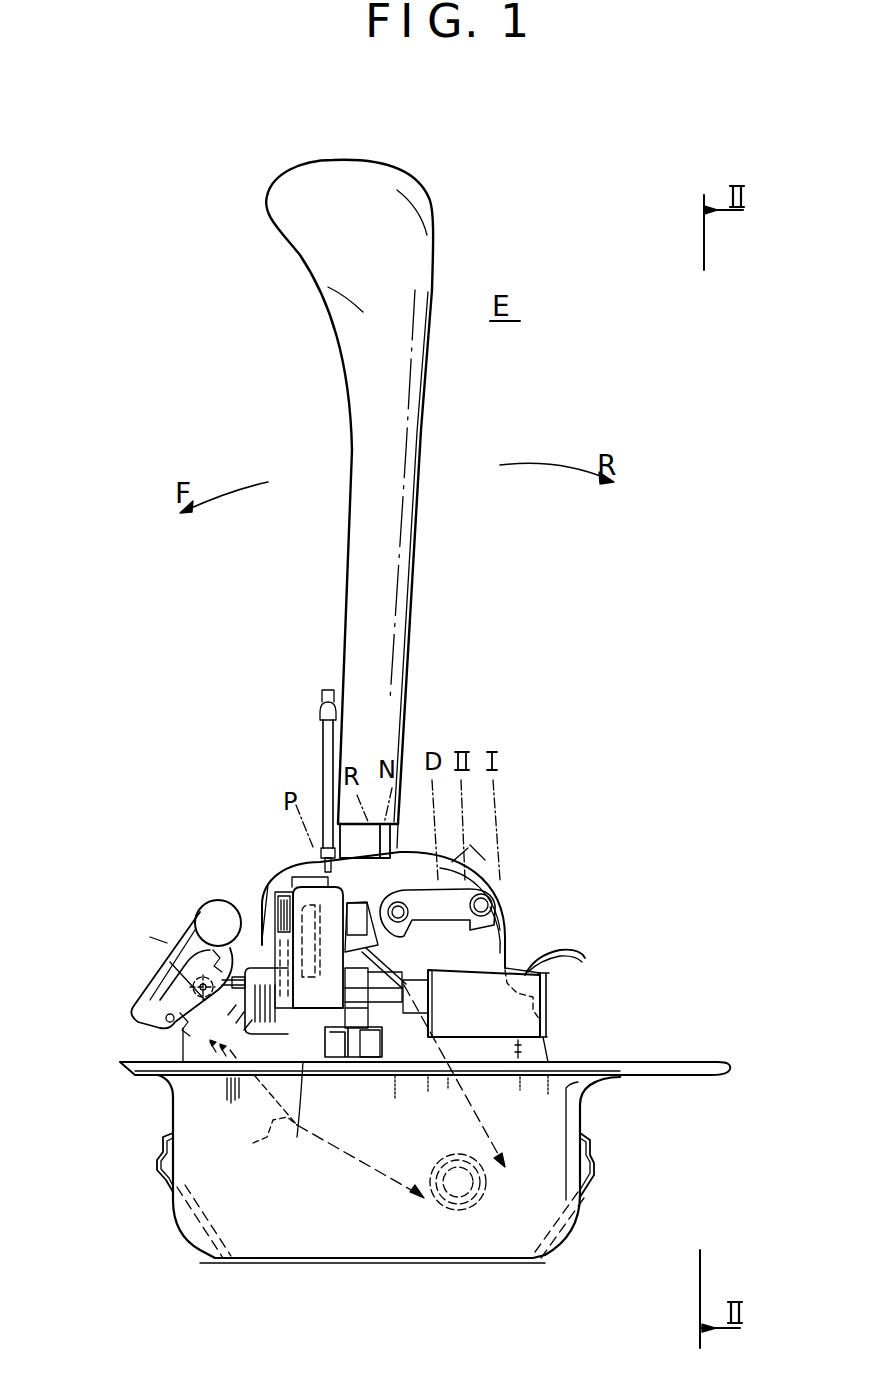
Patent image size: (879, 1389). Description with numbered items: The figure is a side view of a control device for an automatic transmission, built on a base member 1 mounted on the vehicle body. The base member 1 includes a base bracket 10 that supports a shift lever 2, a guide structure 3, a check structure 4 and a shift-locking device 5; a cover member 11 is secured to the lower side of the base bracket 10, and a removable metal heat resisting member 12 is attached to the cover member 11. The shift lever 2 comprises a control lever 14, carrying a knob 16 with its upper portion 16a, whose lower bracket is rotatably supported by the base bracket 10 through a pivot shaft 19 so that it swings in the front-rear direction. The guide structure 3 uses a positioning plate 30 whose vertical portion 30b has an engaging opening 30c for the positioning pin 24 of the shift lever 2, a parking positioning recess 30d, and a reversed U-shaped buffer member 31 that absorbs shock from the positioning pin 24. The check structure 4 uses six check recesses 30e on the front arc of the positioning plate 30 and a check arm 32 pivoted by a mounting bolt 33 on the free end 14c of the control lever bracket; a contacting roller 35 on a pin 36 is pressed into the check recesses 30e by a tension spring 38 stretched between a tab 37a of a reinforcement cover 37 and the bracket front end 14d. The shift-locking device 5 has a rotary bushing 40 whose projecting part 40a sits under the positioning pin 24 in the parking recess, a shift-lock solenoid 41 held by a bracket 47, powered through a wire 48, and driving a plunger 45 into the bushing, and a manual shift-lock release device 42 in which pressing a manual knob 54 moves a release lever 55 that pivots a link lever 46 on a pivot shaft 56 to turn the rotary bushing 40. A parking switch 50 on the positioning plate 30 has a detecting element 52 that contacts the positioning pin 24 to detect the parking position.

The base member 1 is at (662, 1042).
The shift lever 2 is at (398, 492).
The guide structure 3 is at (470, 846).
The check structure 4 is at (170, 934).
The shift-locking device 5 is at (538, 948).
The base bracket 10 is at (700, 1062).
The cover member 11 is at (584, 1105).
The heat resisting member 12 is at (596, 1165).
The control lever 14 is at (400, 824).
The free end of bracket 14c is at (272, 905).
The front end of bracket 14d is at (253, 1118).
The knob 16 is at (415, 418).
The knob 16a is at (432, 232).
The pivot shaft 19 is at (477, 1205).
The positioning pin 24 is at (484, 1014).
The positioning plate 30 is at (458, 850).
The vertical portion 30b is at (466, 857).
The engaging opening 30c is at (509, 918).
The parking positioning recess 30d is at (392, 928).
The check recesses 30e is at (268, 875).
The buffer member 31 is at (490, 870).
The check arm 32 is at (160, 1010).
The mounting bolt 33 is at (210, 910).
The contacting roller 35 is at (167, 943).
The pin 36 is at (170, 968).
The reinforcement cover 37 is at (172, 998).
The tab 37a is at (175, 1025).
The tension spring 38 is at (214, 1101).
The rotary bushing 40 is at (365, 1062).
The projecting part 40a is at (330, 1060).
The shift-lock solenoid 41 is at (550, 980).
The manual shift-lock release device 42 is at (327, 690).
The plunger 45 is at (392, 1047).
The link lever 46 is at (300, 1120).
The bracket 47 is at (548, 1012).
The wire 48 is at (578, 952).
The parking switch 50 is at (300, 877).
The detecting element 52 is at (318, 825).
The manual knob 54 is at (320, 748).
The release lever 55 is at (315, 858).
The pivot shaft 56 is at (216, 1004).